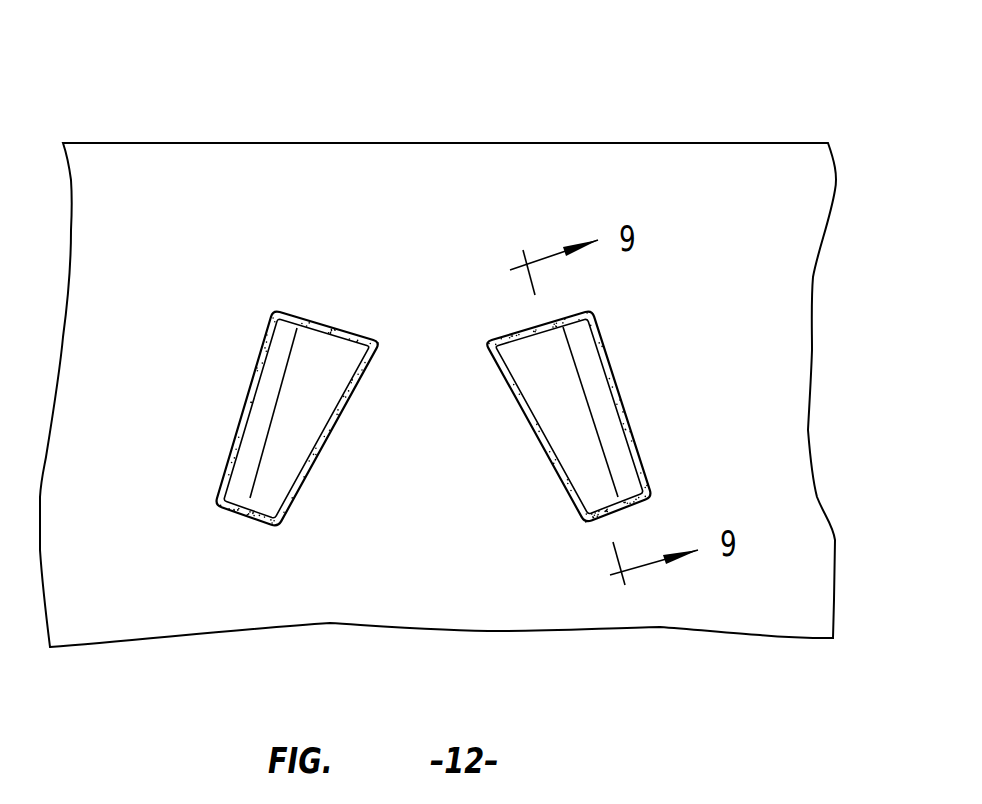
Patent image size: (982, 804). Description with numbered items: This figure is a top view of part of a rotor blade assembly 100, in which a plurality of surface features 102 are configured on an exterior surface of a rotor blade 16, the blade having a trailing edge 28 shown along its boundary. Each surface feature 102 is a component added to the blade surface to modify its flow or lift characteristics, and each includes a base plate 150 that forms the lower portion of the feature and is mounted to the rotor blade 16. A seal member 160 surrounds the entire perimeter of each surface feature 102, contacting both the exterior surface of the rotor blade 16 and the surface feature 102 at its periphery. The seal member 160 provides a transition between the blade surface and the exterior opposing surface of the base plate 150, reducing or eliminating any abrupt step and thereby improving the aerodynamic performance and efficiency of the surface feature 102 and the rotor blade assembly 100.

The rotor blade assembly 100 is at (696, 97).
The rotor blade 16 is at (320, 104).
The trailing edge 28 is at (233, 162).
The surface feature 102 is at (317, 288).
The base plate 150 is at (312, 393).
The seal member 160 is at (336, 464).